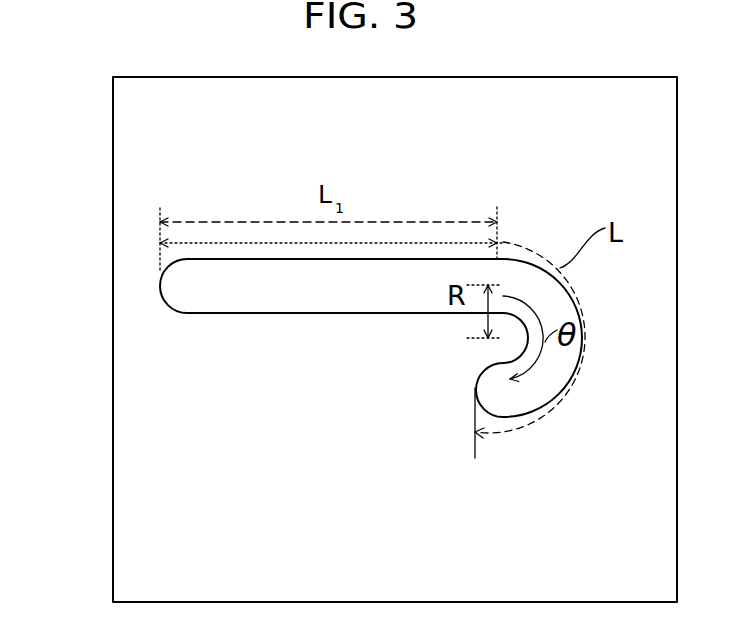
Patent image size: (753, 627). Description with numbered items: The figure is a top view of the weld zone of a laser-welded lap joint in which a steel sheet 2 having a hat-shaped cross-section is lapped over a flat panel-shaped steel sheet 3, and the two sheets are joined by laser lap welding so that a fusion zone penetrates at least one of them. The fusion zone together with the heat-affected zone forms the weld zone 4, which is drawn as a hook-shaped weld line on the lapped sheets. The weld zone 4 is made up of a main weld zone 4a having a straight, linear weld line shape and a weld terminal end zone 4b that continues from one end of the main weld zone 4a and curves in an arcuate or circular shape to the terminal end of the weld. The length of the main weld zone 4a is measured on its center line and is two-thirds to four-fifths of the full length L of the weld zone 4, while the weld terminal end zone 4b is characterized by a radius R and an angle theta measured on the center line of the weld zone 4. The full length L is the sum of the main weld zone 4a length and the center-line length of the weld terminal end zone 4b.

The steel sheet 2 is at (157, 133).
The steel sheet 3 is at (157, 180).
The weld zone 4 is at (371, 359).
The main weld zone 4a is at (408, 293).
The weld terminal end zone 4b is at (477, 393).